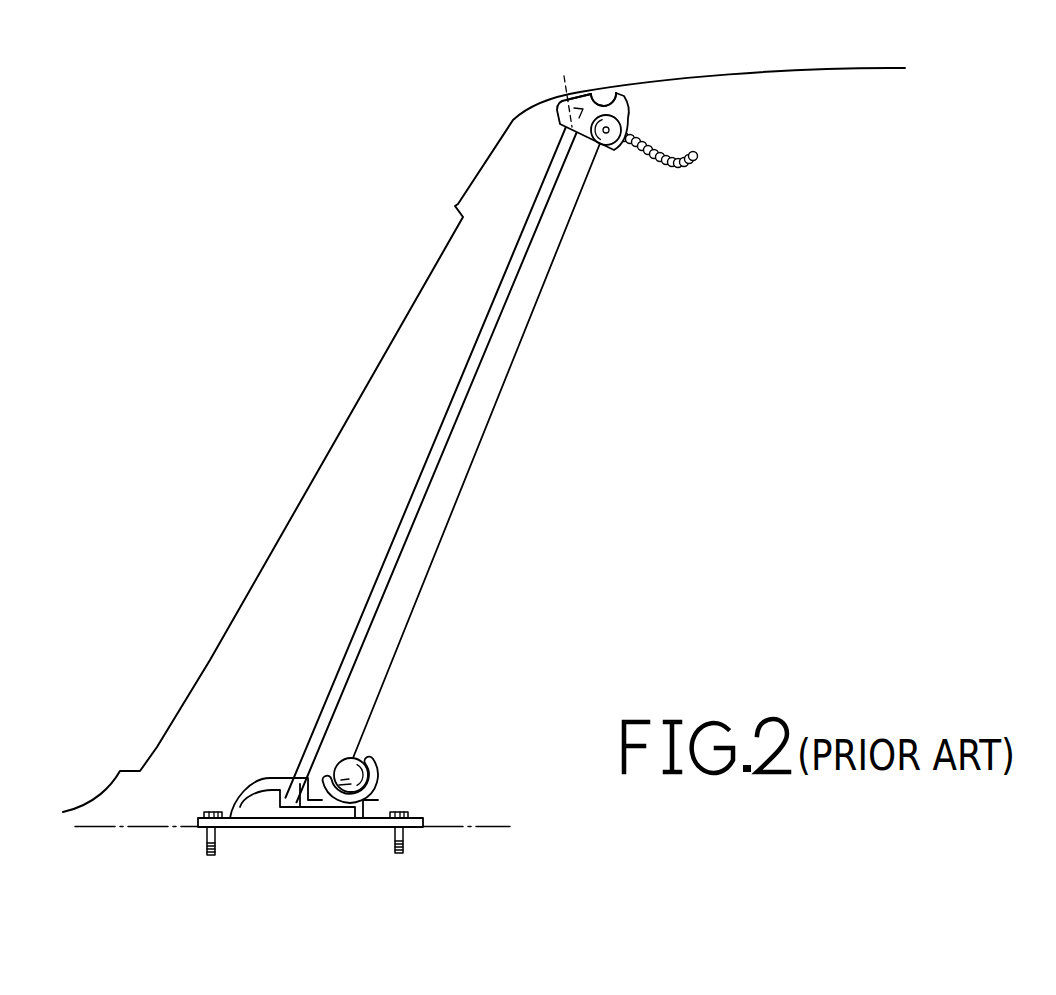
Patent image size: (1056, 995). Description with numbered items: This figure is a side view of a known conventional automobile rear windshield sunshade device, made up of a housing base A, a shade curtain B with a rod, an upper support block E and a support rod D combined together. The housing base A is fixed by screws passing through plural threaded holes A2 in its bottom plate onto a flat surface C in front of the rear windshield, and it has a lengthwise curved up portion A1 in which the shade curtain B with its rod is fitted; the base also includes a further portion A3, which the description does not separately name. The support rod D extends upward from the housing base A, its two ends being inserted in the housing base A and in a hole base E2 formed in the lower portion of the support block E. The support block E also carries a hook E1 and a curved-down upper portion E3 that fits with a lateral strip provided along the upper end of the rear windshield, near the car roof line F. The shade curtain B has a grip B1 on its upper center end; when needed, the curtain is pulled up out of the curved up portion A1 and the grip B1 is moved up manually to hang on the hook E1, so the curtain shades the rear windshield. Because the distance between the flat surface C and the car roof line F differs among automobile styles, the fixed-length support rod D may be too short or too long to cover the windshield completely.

The housing base A is at (284, 810).
The lengthwise curved up portion A1 is at (376, 757).
The threaded holes A2 is at (203, 830).
The hook portion receiving rod end A3 is at (288, 797).
The shade curtain B is at (380, 782).
The grip B1 is at (674, 172).
The flat surface C is at (494, 829).
The support rod D is at (416, 492).
The upper support block E is at (599, 88).
The hook E1 is at (622, 116).
The hole base E2 is at (565, 90).
The curved-down upper portion E3 is at (580, 90).
The car roof line F is at (608, 90).